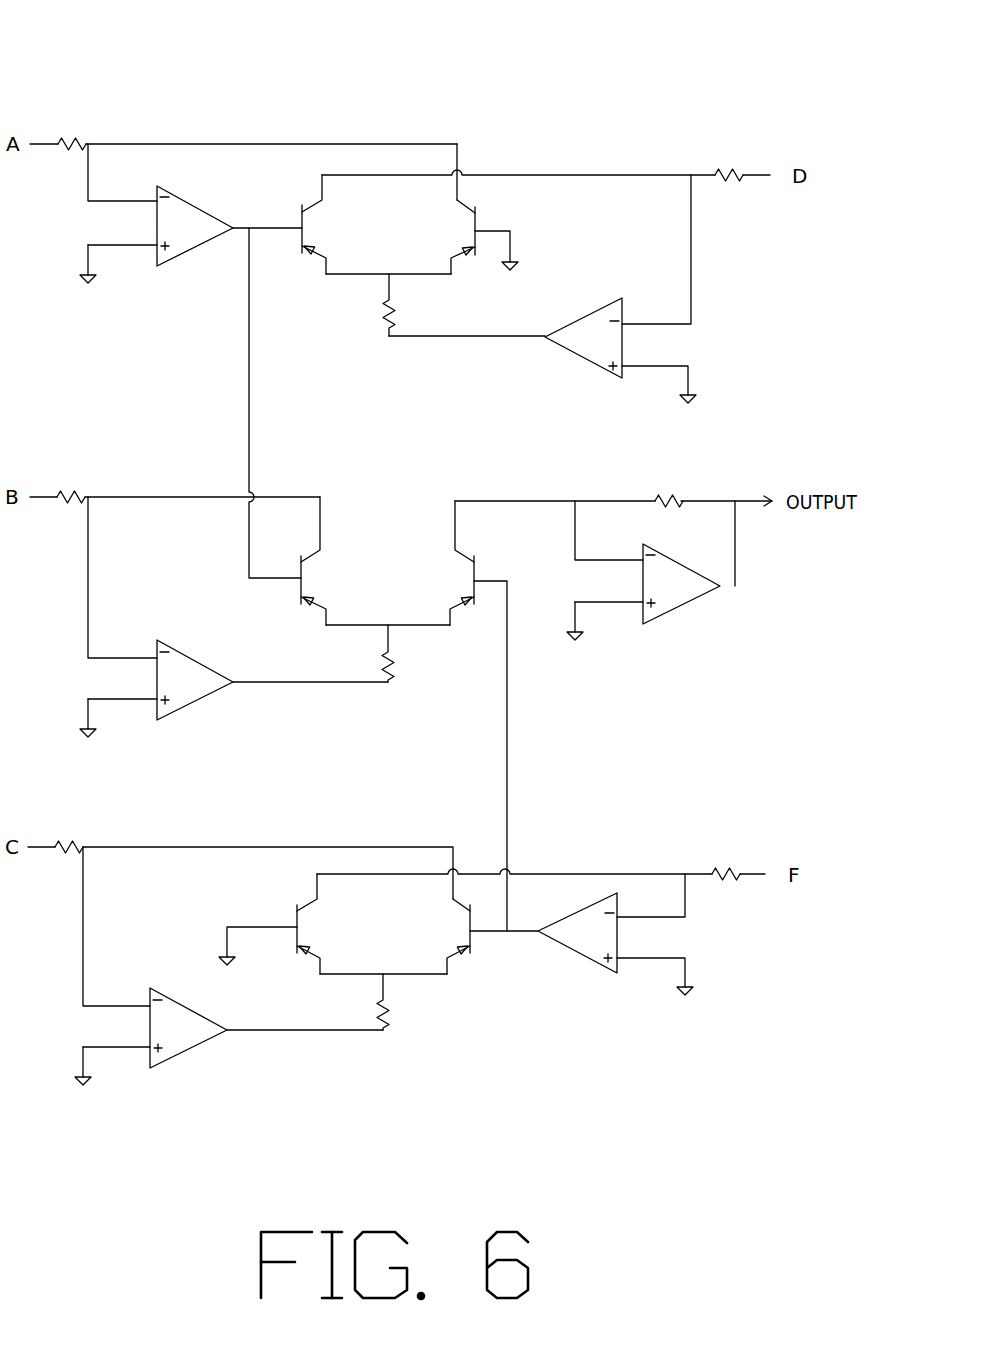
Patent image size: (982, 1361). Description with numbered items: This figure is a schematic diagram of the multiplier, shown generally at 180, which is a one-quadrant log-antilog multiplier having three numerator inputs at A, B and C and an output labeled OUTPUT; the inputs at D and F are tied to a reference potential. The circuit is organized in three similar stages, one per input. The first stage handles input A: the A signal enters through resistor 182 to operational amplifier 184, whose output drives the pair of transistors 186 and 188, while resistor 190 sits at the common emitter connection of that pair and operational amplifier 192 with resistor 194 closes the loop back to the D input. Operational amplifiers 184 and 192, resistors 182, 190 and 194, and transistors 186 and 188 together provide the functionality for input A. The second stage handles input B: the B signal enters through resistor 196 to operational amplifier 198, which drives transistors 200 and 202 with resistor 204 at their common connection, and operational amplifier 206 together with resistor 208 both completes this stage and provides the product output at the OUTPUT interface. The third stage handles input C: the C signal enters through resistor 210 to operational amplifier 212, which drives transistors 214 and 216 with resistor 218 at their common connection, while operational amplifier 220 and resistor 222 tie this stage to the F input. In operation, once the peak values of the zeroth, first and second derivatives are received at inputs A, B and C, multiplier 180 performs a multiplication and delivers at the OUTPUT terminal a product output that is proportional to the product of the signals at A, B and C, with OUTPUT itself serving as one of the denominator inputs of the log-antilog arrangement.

The multiplier 180 is at (127, 36).
The resistor 182 is at (70, 135).
The operational amplifier 184 is at (182, 252).
The transistor 186 is at (317, 205).
The transistor 188 is at (488, 229).
The resistor 190 is at (385, 306).
The operational amplifier 192 is at (590, 316).
The resistor 194 is at (726, 164).
The resistor 196 is at (70, 487).
The operational amplifier 198 is at (182, 706).
The transistor 200 is at (311, 579).
The transistor 202 is at (480, 579).
The resistor 204 is at (377, 655).
The operational amplifier 206 is at (670, 612).
The resistor 208 is at (667, 492).
The resistor 210 is at (72, 836).
The operational amplifier 212 is at (178, 1055).
The transistor 214 is at (310, 903).
The transistor 216 is at (457, 943).
The resistor 218 is at (378, 1006).
The operational amplifier 220 is at (582, 956).
The resistor 222 is at (722, 866).